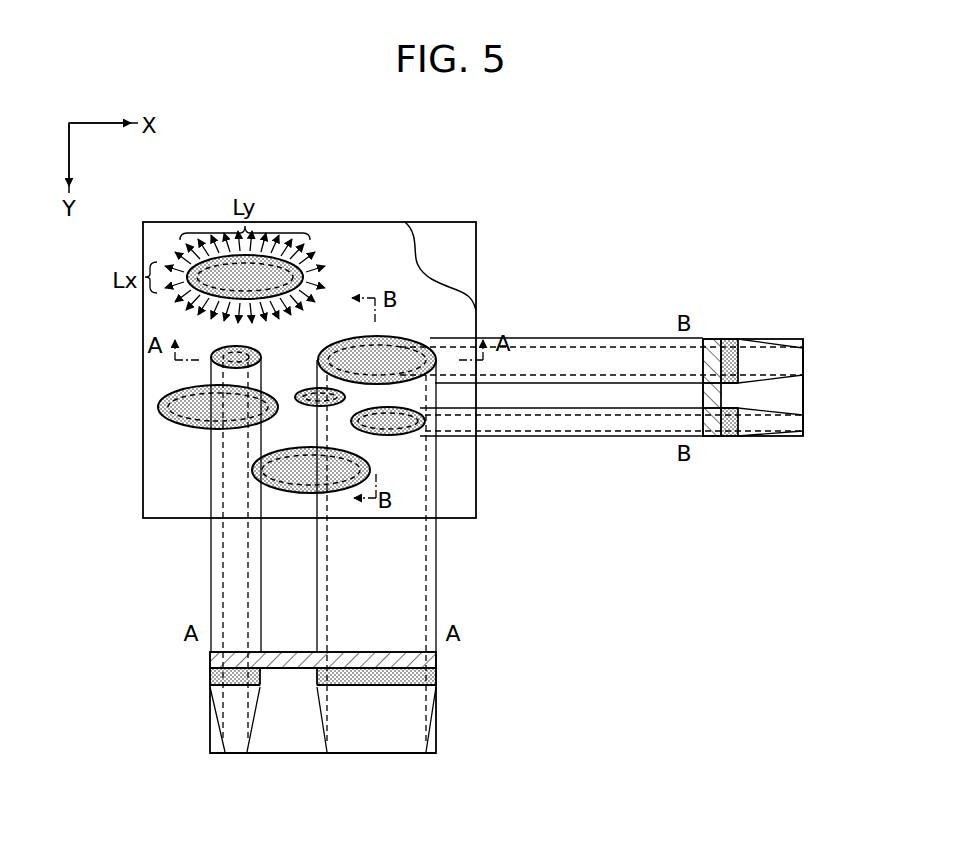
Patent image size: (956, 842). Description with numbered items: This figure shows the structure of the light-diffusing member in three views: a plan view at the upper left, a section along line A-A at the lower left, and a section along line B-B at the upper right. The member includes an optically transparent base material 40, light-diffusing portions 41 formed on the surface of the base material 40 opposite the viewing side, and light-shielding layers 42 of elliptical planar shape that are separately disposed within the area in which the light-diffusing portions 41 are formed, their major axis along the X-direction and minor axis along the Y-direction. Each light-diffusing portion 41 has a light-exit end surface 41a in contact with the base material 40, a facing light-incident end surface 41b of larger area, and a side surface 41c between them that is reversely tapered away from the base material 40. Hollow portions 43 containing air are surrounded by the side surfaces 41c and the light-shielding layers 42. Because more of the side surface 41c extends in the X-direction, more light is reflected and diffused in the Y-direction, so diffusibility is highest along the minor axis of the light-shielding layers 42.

The base material 40 is at (477, 258).
The light-diffusing portion 41 is at (306, 262).
The light-shielding layer 42 is at (463, 317).
The hollow portion 43 is at (765, 358).
The light-exit end surface 41a is at (718, 400).
The light-incident end surface 41b is at (805, 395).
The side surface 41c is at (763, 420).